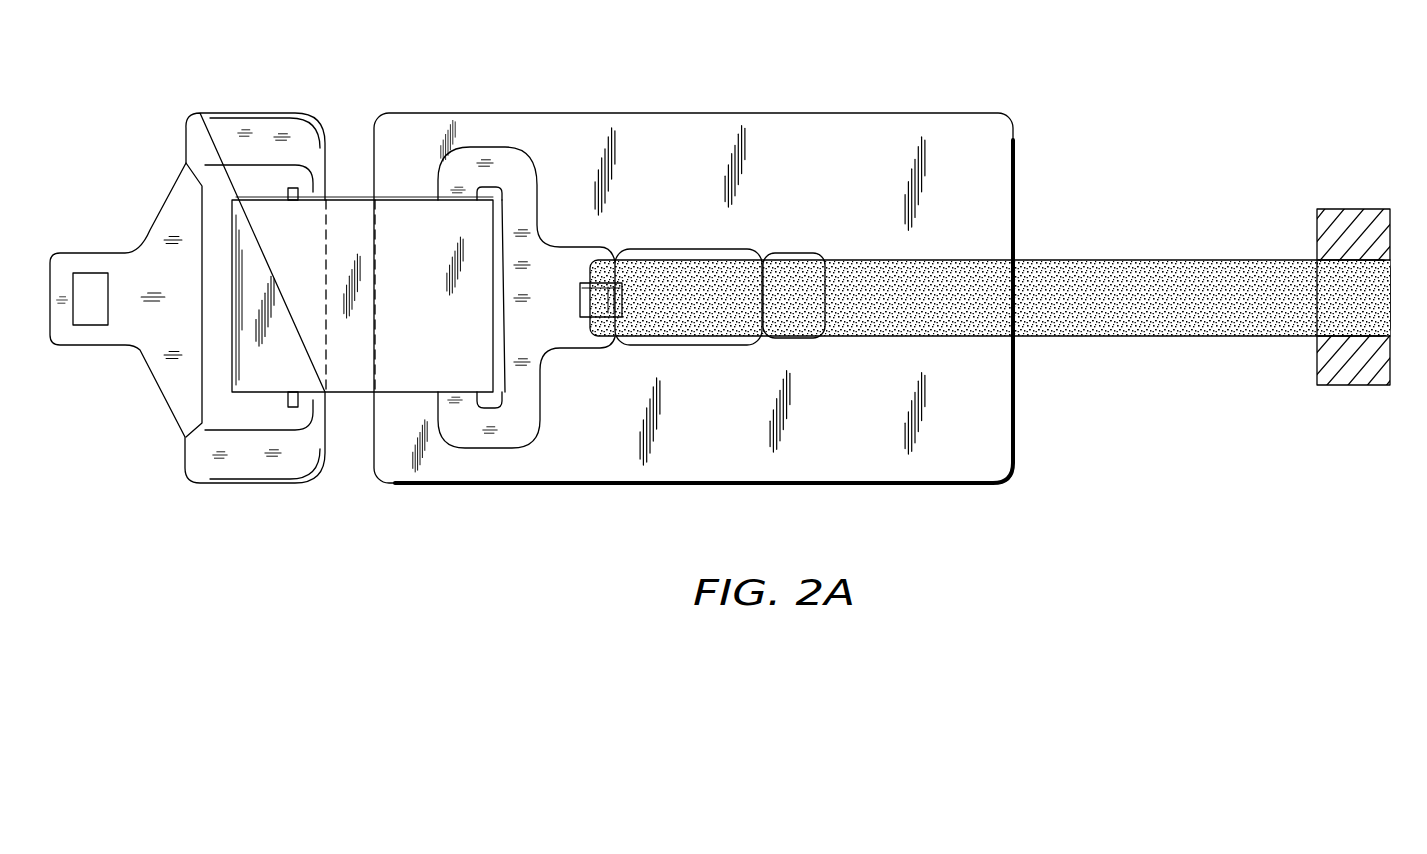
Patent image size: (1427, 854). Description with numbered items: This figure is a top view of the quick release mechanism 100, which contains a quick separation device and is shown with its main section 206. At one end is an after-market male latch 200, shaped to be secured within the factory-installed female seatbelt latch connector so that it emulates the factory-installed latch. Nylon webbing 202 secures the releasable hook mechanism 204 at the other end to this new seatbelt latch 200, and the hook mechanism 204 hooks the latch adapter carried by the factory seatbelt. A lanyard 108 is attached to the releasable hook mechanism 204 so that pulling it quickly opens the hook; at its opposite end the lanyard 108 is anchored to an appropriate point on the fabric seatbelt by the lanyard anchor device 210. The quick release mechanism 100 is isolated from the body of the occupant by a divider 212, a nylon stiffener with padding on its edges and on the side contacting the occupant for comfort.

The quick release mechanism 100 is at (678, 118).
The lanyard 108 is at (1142, 265).
The male latch 200 is at (157, 438).
The nylon webbing 202 is at (357, 220).
The releasable hook mechanism 204 is at (805, 253).
The main section 206 is at (490, 83).
The anchor device 210 is at (1352, 388).
The divider 212 is at (997, 440).